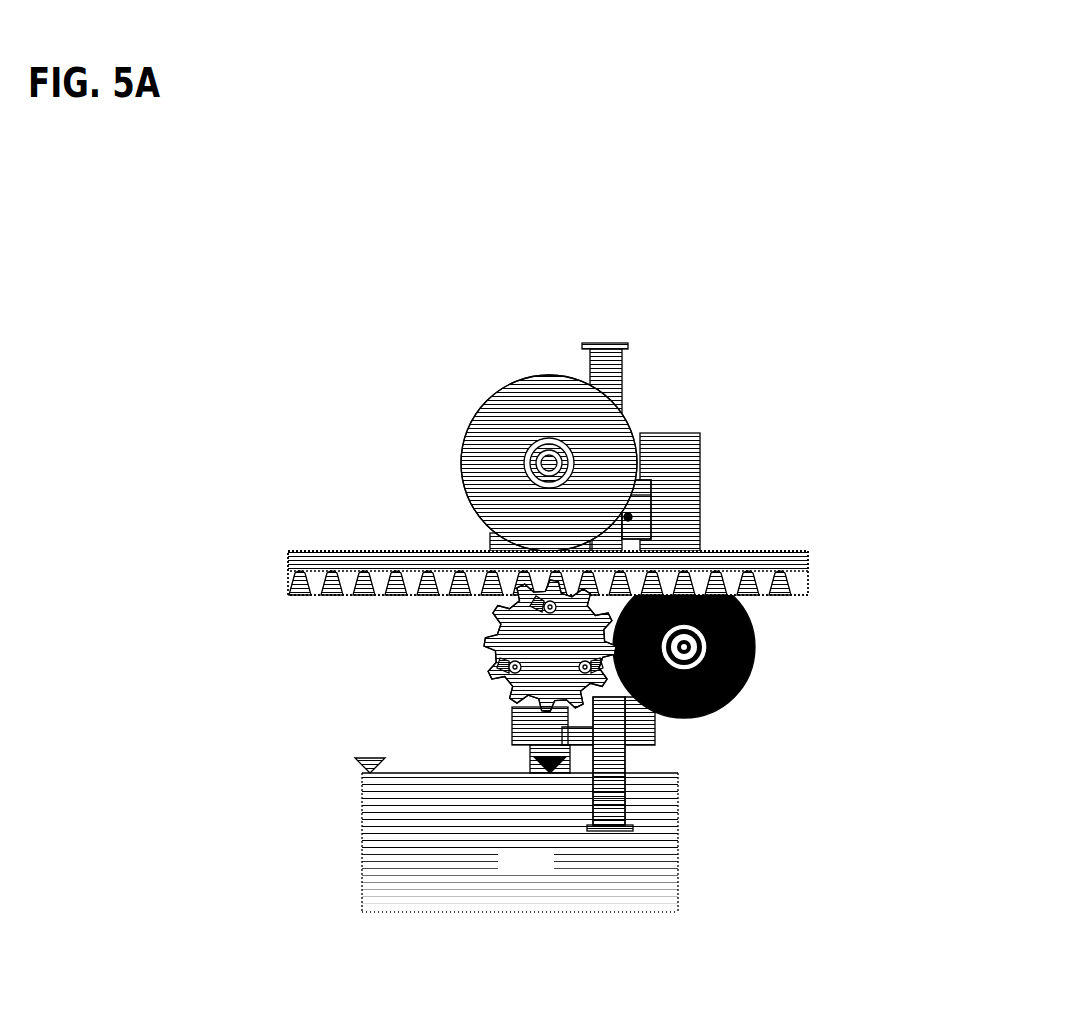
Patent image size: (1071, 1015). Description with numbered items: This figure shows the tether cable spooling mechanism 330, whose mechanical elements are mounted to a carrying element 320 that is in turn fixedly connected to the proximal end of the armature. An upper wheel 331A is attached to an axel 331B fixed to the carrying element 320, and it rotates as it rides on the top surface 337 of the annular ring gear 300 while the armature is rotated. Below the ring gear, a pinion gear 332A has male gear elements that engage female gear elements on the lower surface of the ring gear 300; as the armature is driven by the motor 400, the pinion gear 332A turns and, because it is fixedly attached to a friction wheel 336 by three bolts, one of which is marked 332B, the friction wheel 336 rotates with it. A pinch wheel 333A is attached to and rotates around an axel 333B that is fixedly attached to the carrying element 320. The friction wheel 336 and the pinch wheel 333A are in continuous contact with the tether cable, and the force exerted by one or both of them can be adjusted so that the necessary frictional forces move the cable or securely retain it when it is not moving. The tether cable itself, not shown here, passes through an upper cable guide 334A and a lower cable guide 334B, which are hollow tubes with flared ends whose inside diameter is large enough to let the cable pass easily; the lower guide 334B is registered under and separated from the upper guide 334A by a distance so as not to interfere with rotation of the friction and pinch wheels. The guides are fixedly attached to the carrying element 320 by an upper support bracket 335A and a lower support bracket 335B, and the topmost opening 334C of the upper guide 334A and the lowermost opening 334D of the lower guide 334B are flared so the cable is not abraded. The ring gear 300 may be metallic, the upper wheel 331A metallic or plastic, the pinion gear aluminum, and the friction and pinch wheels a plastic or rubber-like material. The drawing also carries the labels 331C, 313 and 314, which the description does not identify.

The spooling mechanism 330 is at (577, 517).
The annular ring gear 300 is at (787, 568).
The top surface 337 is at (323, 552).
The friction wheel 336 is at (483, 592).
The upper wheel 331A is at (476, 483).
The axel 331B is at (546, 463).
The spool axle 331C is at (551, 455).
The pinion gear 332A is at (545, 638).
The bolt 332B is at (512, 672).
The pinch wheel 333A is at (712, 693).
The axel 333B is at (684, 648).
The upper cable guide 334A is at (615, 362).
The lower cable guide 334B is at (607, 808).
The top most opening 334C is at (612, 345).
The lower most opening 334D is at (613, 830).
The upper support bracket 335A is at (650, 518).
The lower support bracket 335B is at (637, 737).
The carrying element 320 is at (682, 467).
The nozzle block 313 is at (528, 740).
The nozzle 314 is at (530, 750).
The motor 400 is at (516, 835).